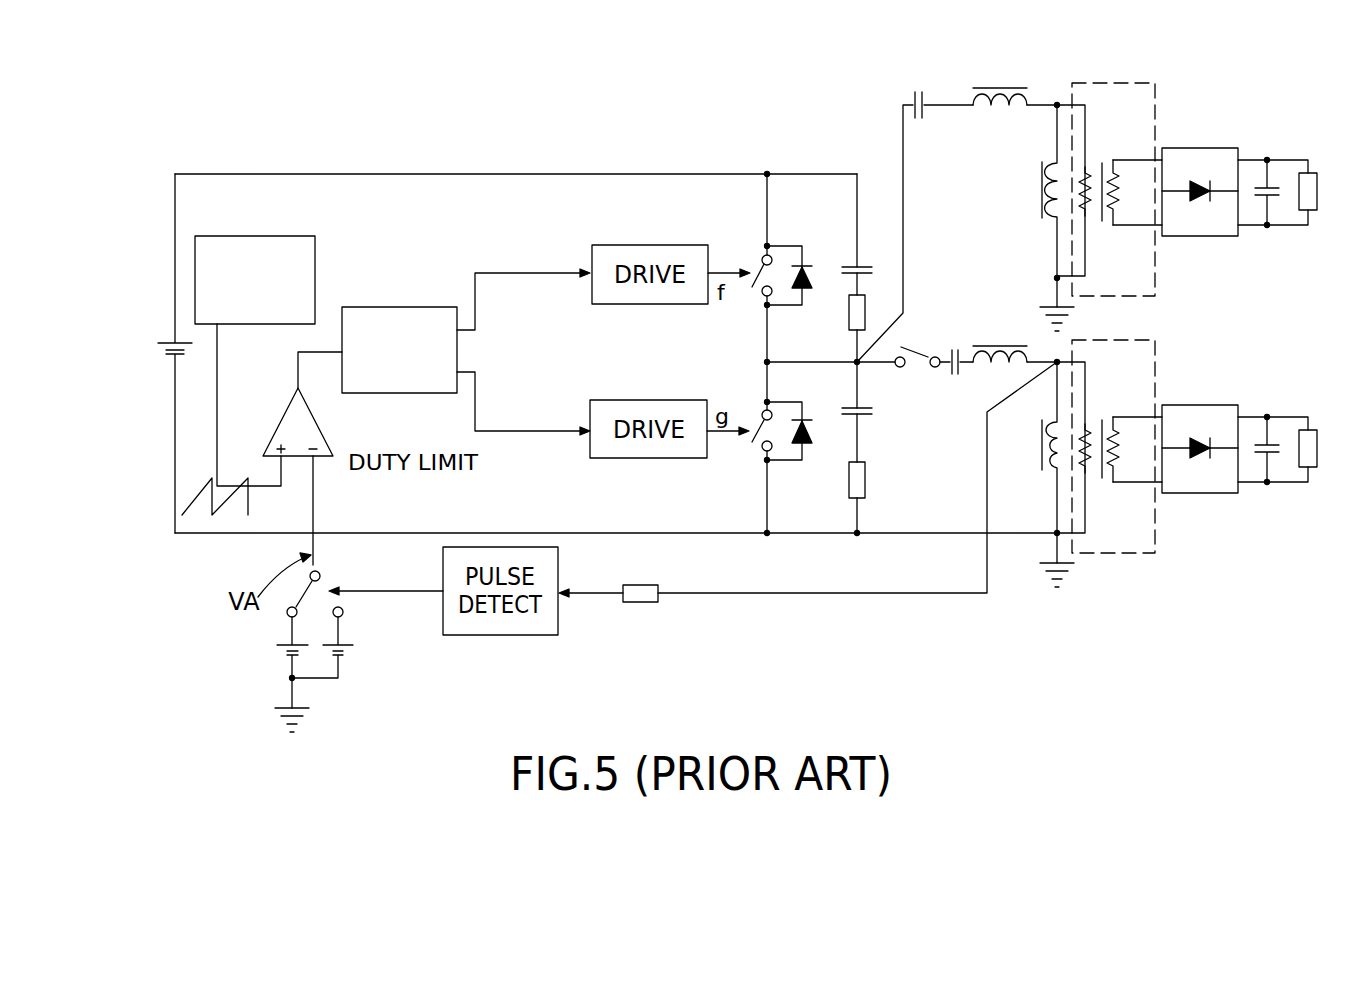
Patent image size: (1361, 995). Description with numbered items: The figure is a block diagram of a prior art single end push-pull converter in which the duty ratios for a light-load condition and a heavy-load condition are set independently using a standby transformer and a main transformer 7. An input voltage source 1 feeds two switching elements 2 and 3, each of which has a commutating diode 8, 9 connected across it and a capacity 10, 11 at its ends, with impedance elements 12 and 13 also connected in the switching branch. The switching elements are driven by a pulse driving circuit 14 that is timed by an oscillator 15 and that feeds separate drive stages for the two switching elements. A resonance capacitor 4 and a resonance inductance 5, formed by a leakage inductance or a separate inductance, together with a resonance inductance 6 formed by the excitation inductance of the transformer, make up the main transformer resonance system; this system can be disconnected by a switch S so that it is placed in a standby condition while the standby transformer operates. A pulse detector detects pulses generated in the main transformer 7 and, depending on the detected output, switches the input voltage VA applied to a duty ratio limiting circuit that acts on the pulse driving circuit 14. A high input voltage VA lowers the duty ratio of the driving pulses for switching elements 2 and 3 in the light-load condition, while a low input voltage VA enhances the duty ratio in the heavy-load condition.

The input voltage source 1 is at (166, 341).
The switching element 2 is at (757, 272).
The switching element 3 is at (758, 440).
The resonance capacitor 4 is at (961, 375).
The resonance inductance 5 is at (1003, 346).
The resonance inductance 6 is at (1037, 467).
The main transformer 7 is at (1157, 357).
The commutating diode 8 is at (818, 276).
The commutating diode 9 is at (814, 431).
The capacity 10 is at (858, 266).
The capacity 11 is at (862, 415).
The impedance element 12 is at (842, 320).
The impedance element 13 is at (846, 500).
The pulse driving circuit 14 is at (424, 307).
The oscillator 15 is at (290, 236).
The switch S is at (917, 344).